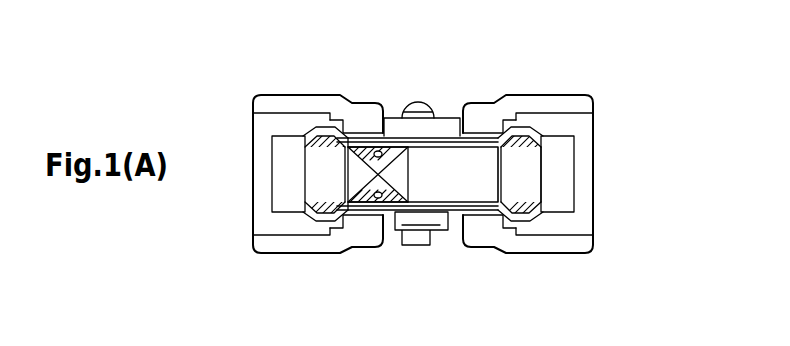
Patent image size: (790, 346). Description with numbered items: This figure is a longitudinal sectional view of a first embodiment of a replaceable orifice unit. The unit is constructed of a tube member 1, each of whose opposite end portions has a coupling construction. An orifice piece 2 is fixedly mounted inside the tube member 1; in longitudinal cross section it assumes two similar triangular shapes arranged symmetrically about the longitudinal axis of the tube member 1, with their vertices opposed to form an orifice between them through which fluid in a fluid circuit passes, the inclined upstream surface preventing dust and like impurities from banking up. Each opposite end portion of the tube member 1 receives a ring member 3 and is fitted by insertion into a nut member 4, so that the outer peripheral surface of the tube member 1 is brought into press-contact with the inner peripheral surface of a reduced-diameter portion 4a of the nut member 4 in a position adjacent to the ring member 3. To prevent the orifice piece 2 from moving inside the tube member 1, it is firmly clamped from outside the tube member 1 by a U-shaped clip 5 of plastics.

The tube member 1 is at (449, 195).
The orifice piece 2 is at (393, 210).
The ring member 3 is at (323, 198).
The nut member 4 is at (296, 244).
The reduced-diameter portion 4a is at (363, 118).
The U-shaped clip 5 is at (450, 116).